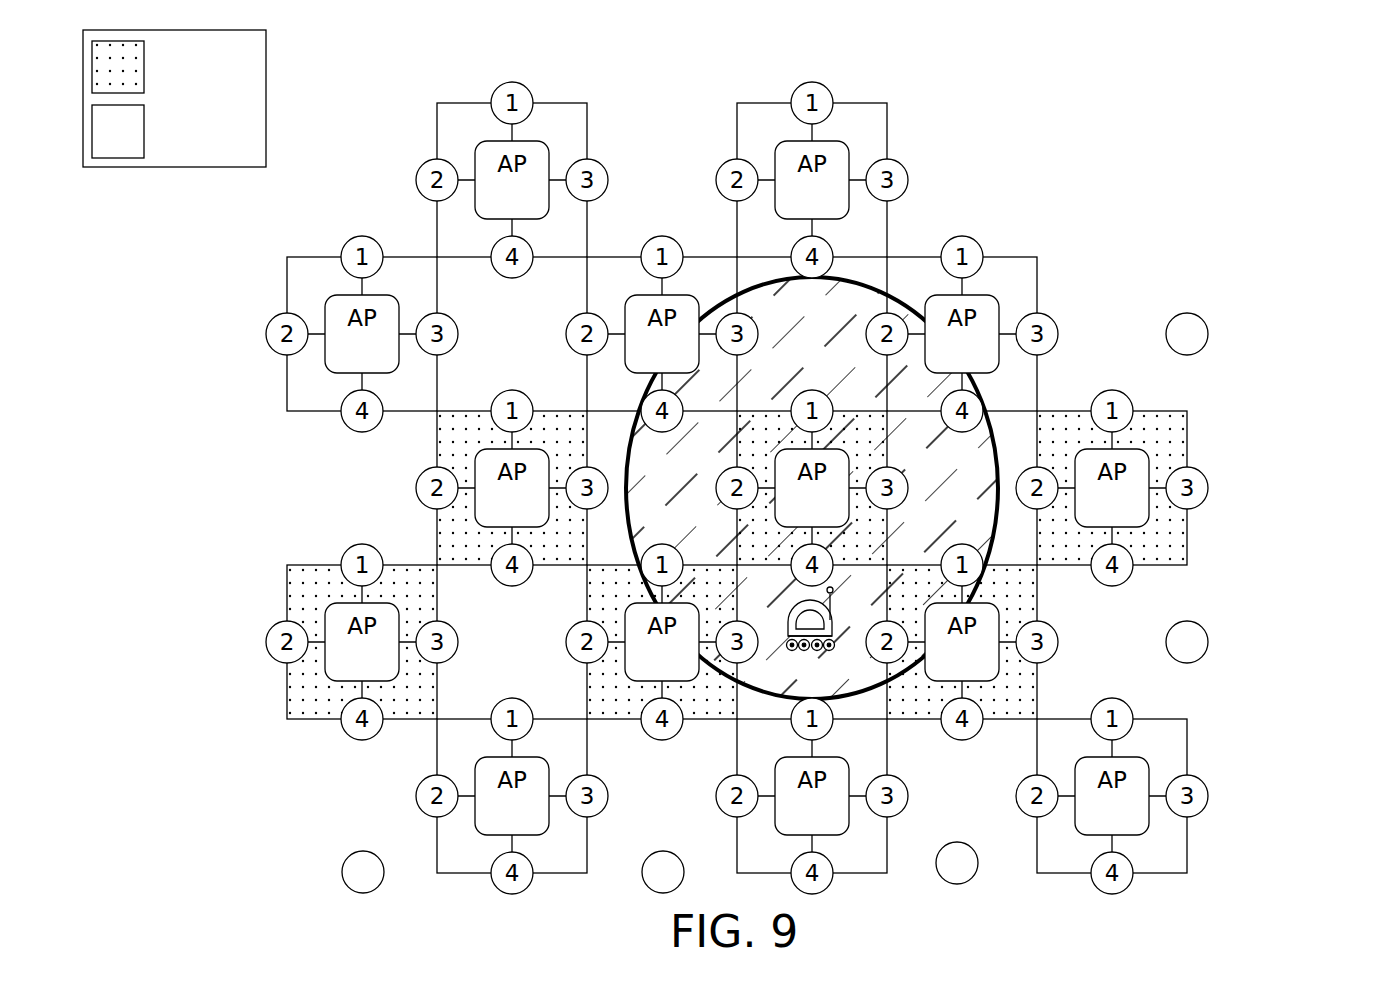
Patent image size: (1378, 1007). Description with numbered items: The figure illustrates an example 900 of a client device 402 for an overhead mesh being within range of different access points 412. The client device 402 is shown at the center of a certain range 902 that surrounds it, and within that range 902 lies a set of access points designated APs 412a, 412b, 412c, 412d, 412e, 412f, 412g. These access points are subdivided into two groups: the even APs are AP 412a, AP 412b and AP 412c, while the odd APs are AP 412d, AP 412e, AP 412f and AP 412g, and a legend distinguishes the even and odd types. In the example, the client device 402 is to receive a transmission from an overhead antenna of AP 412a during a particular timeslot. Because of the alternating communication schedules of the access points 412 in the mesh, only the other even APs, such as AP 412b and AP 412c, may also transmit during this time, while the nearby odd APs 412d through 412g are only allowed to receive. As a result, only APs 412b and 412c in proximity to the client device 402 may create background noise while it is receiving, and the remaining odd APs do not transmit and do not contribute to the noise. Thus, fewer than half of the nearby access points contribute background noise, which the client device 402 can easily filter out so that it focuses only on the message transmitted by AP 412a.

The example of a client device within range of different access points 900 is at (723, 462).
The access points (APs) 412 is at (490, 210).
The AP (even AP) 412a is at (784, 518).
The AP (even AP) 412b is at (634, 672).
The AP (even AP) 412c is at (934, 672).
The AP (odd AP) 412d is at (784, 210).
The AP (odd AP) 412e is at (634, 364).
The AP (odd AP) 412f is at (936, 364).
The AP (odd AP) 412g is at (784, 826).
The range 902 is at (873, 296).
The client device 402 is at (802, 655).